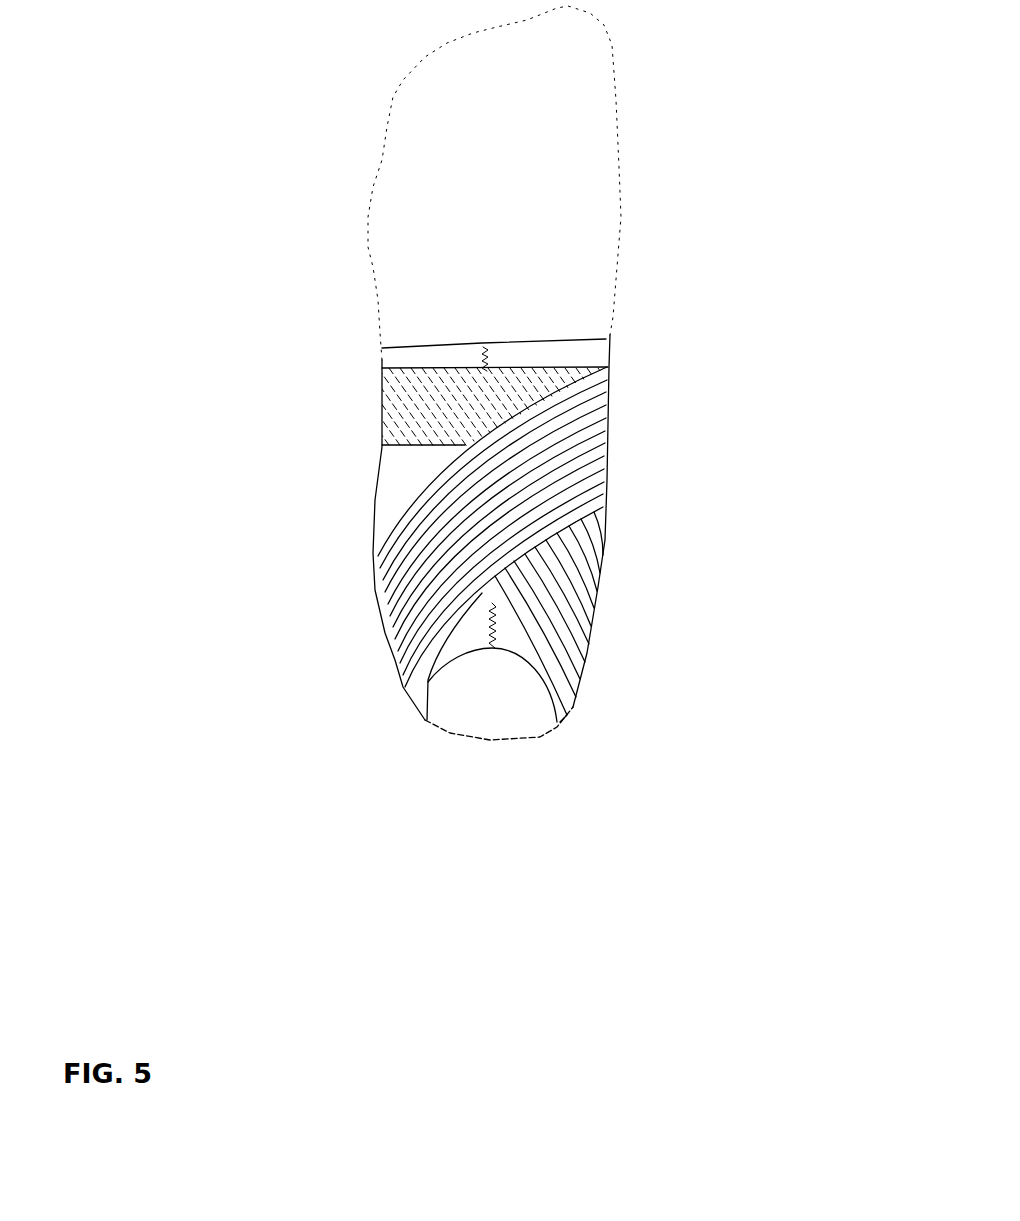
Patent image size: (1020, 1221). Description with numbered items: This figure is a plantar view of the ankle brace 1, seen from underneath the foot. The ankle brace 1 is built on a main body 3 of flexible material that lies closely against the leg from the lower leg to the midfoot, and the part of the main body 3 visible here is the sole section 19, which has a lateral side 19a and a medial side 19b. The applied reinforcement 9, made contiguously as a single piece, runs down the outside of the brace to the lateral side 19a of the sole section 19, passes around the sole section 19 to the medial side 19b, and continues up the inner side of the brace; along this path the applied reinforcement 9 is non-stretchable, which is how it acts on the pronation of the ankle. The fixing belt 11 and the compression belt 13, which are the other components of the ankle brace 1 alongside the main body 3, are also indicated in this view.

The ankle brace 1 is at (357, 725).
The main body 3 is at (573, 353).
The applied reinforcement 9 is at (402, 467).
The fixing belt 11 is at (422, 397).
The compression belt 13 is at (520, 483).
The sole section 19 is at (430, 472).
The lateral side of the sole section 19a is at (390, 428).
The medial side of the sole section 19b is at (595, 415).